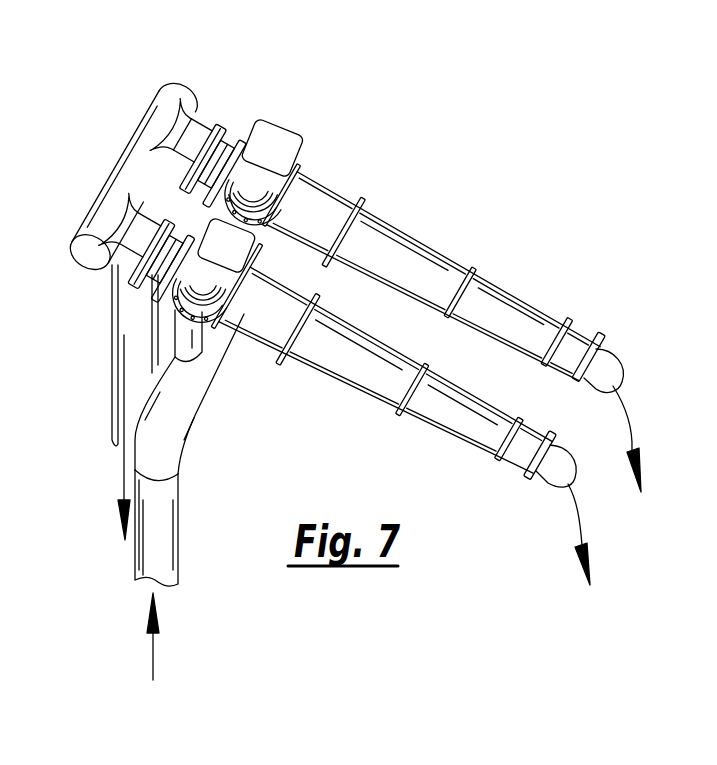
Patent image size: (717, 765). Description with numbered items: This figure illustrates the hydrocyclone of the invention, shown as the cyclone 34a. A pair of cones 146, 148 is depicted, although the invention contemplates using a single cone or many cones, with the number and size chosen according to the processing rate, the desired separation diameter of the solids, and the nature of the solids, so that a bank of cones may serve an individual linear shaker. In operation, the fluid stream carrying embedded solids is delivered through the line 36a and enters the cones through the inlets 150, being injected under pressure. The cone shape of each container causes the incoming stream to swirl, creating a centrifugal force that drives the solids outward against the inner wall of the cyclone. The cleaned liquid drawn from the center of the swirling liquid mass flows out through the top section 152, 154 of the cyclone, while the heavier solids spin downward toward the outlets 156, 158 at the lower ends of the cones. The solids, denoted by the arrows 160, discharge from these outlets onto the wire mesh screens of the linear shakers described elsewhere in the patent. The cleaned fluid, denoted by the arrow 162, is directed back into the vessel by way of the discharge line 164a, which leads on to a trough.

The cyclone 34a is at (353, 374).
The line 36a is at (170, 527).
The cone 146 is at (393, 248).
The cone 148 is at (387, 387).
The inlets 150 is at (204, 340).
The top section 152 is at (140, 217).
The top section 154 is at (192, 123).
The outlet 156 is at (549, 477).
The outlet 158 is at (603, 368).
The arrows 160 is at (636, 478).
The arrow 162 is at (118, 518).
The discharge line 164a is at (124, 366).